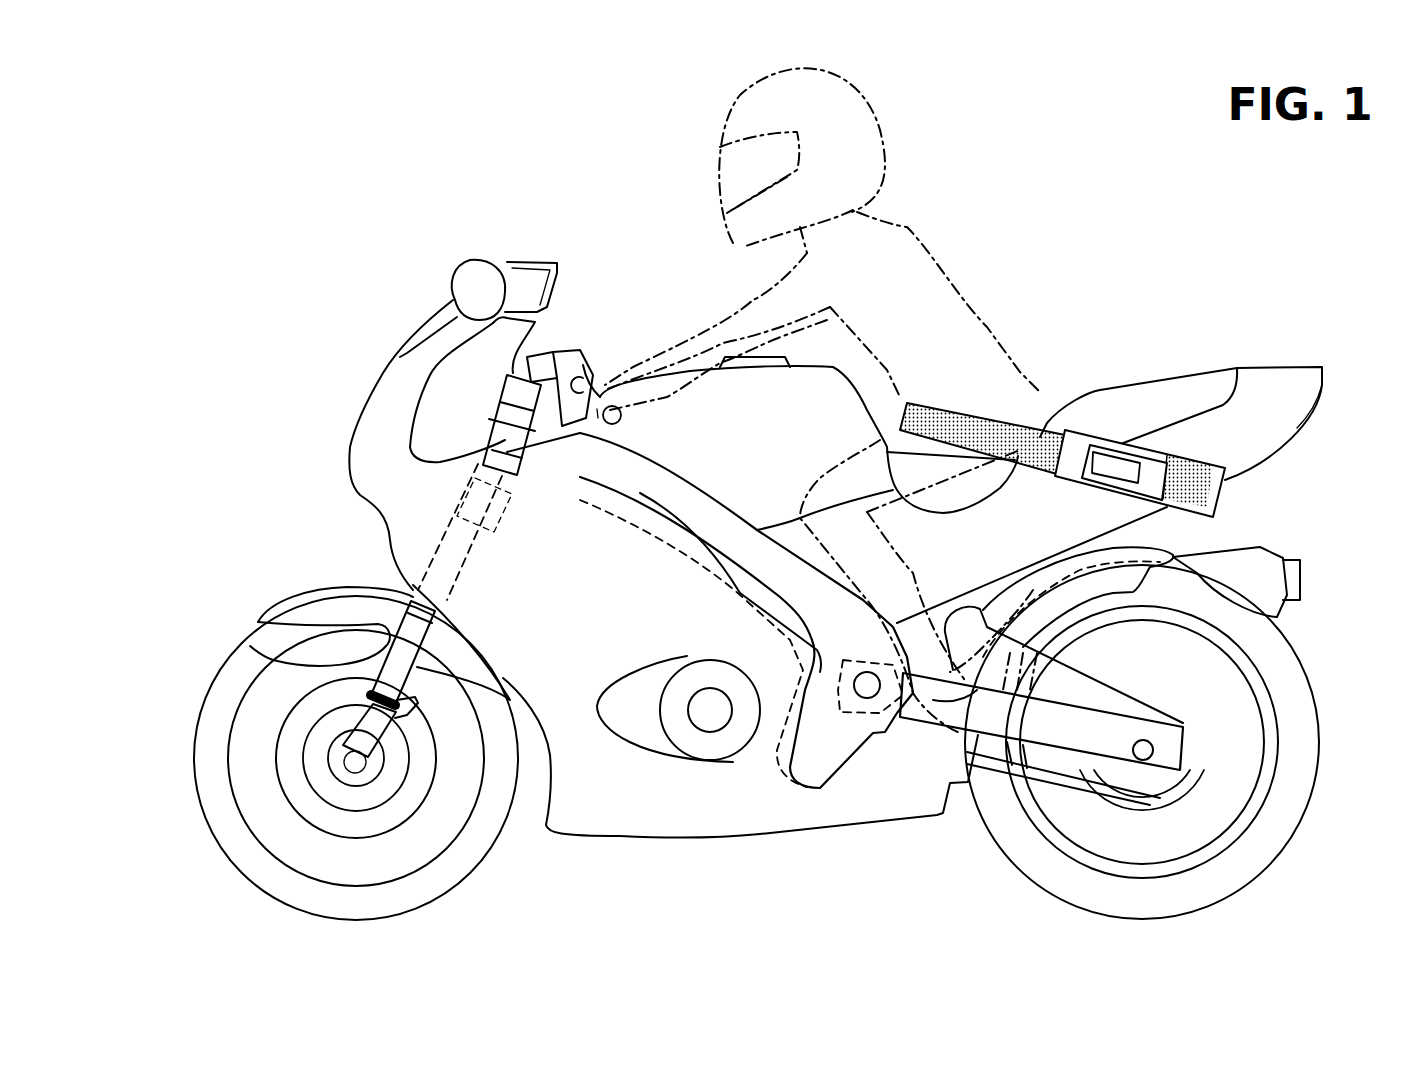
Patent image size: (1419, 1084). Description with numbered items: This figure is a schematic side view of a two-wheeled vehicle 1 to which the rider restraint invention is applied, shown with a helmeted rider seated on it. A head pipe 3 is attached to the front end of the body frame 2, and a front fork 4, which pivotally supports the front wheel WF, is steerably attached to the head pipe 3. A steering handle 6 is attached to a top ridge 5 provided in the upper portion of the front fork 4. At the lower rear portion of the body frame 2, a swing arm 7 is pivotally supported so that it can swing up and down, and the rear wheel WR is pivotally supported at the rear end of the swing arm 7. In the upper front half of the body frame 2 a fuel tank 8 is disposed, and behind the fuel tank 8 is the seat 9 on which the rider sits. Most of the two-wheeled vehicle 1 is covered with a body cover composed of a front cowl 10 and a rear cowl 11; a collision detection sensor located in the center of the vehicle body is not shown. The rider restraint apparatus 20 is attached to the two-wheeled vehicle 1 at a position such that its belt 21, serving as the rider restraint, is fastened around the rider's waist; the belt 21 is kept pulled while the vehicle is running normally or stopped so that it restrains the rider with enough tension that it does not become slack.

The two-wheeled vehicle 1 is at (470, 188).
The body frame 2 is at (670, 470).
The head pipe 3 is at (505, 468).
The front fork 4 is at (257, 663).
The top ridge 5 is at (507, 452).
The steering handle 6 is at (582, 356).
The swing arm 7 is at (950, 730).
The fuel tank 8 is at (833, 370).
The seat 9 is at (1120, 387).
The front cowl 10 is at (350, 488).
The rear cowl 11 is at (1320, 387).
The rider restraint apparatus 20 is at (1175, 440).
The belt 21 is at (973, 413).
The front wheel WF is at (195, 745).
The rear wheel WR is at (1318, 683).